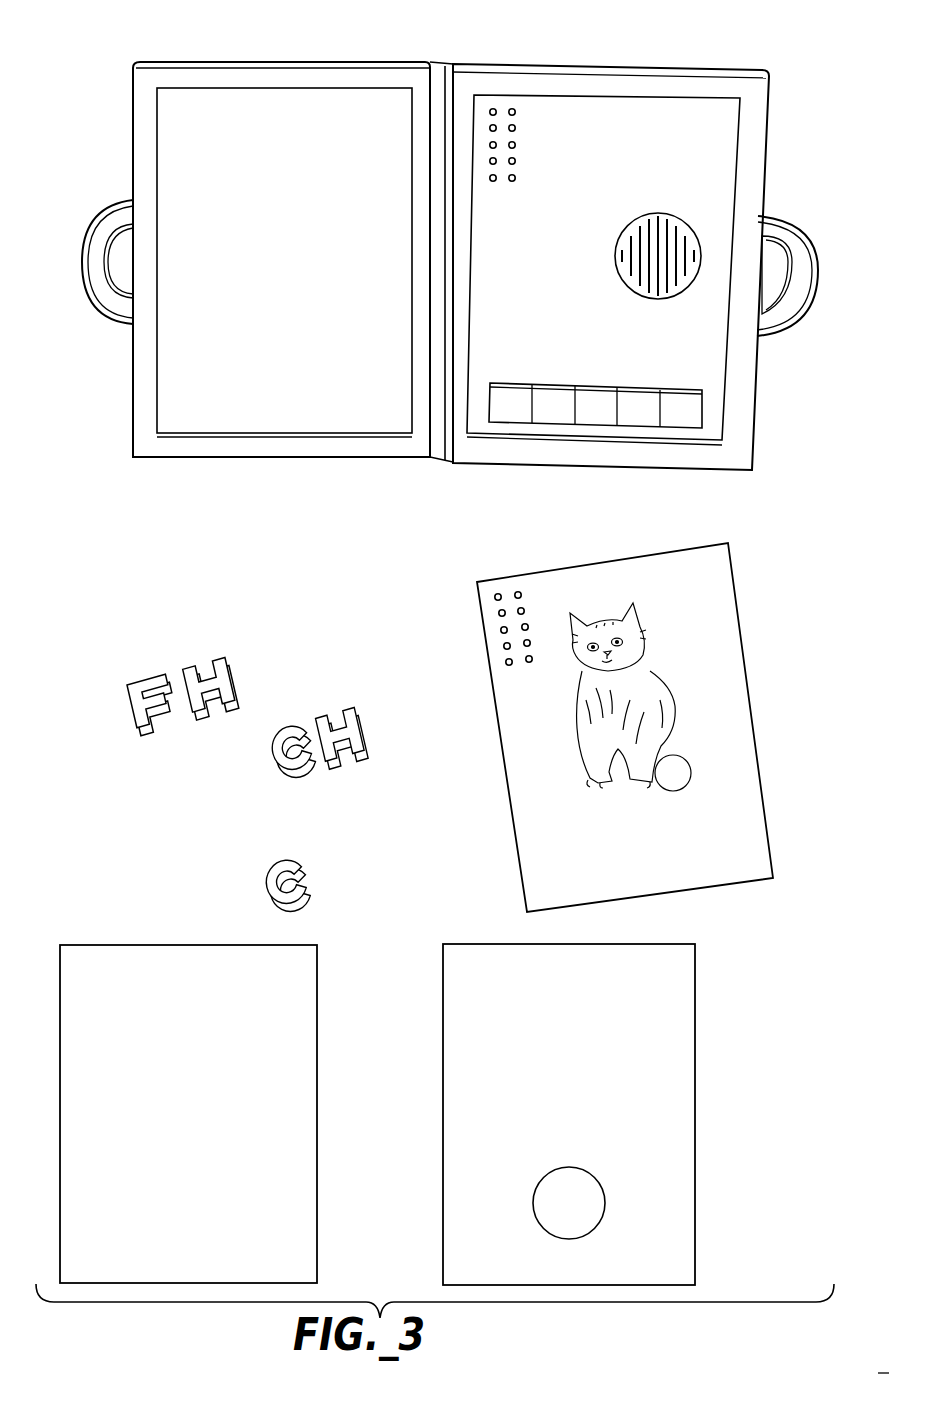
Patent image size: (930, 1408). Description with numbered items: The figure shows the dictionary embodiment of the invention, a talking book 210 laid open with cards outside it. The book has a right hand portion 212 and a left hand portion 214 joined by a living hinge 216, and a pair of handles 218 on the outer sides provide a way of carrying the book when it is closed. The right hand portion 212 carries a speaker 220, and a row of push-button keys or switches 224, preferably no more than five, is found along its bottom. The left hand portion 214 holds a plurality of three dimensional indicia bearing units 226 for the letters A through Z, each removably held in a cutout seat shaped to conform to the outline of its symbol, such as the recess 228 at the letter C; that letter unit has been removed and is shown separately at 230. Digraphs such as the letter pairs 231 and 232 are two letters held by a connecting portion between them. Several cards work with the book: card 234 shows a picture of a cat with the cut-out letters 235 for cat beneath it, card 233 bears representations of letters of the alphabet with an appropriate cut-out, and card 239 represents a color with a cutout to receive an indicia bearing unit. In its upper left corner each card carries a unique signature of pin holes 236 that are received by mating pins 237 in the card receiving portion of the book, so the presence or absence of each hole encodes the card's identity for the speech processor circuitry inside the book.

The talking book 210 is at (112, 36).
The right hand portion 212 is at (696, 68).
The left hand portion 214 is at (202, 62).
The living hinge 216 is at (437, 457).
The handles 218 is at (800, 234).
The speaker 220 is at (665, 214).
The push-button keys or switches 224 is at (640, 410).
The three dimensional indicia bearing units 226 is at (330, 410).
The recess 228 is at (300, 118).
The indicia bearing unit for letter C 230 is at (278, 858).
The letter combination block FH 231 is at (150, 682).
The letter combination block CH 232 is at (280, 738).
The card 233 is at (298, 945).
The card 234 is at (740, 740).
The word letters 235 is at (700, 870).
The pin holes 236 is at (500, 612).
The mating pins 237 is at (514, 148).
The card 239 is at (697, 954).